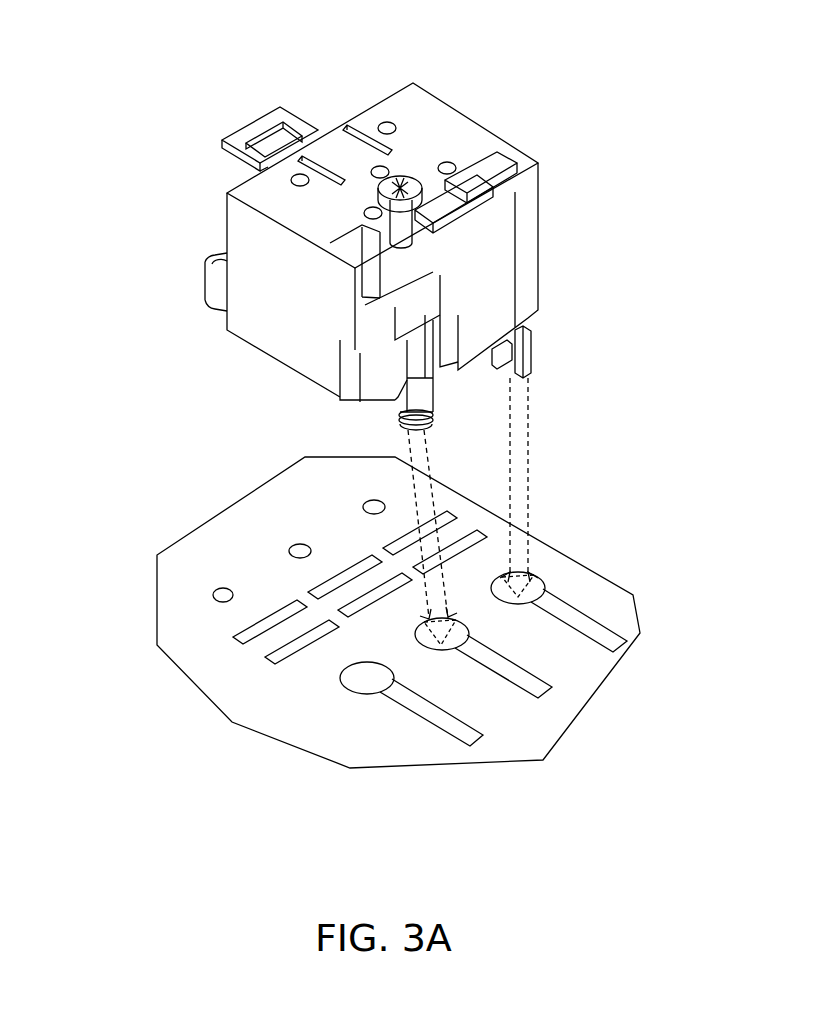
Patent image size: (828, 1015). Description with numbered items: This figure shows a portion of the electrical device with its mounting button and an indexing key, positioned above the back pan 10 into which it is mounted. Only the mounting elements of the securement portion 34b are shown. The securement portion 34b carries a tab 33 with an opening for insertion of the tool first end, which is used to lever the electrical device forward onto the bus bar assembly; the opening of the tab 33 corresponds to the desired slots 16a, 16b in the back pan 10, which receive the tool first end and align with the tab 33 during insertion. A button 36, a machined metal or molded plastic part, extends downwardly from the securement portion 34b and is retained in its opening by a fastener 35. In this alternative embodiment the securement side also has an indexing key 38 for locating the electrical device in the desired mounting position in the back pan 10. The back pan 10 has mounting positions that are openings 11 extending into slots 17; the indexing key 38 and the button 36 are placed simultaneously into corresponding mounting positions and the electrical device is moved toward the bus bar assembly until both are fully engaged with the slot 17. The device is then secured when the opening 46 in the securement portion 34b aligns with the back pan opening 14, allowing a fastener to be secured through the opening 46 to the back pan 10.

The back pan 10 is at (575, 678).
The opening 11 is at (357, 687).
The back pan opening 14 is at (210, 595).
The slot 16a is at (230, 647).
The slot 16b is at (262, 660).
The slot 17 is at (470, 740).
The tab 33 is at (260, 117).
The securement portion 34b is at (443, 97).
The fastener 35 is at (423, 173).
The button 36 is at (390, 418).
The indexing key 38 is at (533, 345).
The opening 46 is at (207, 288).